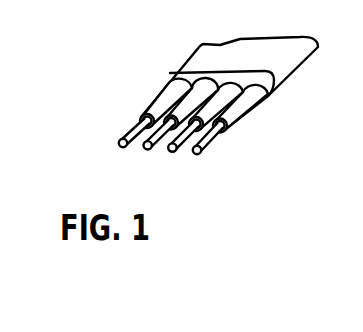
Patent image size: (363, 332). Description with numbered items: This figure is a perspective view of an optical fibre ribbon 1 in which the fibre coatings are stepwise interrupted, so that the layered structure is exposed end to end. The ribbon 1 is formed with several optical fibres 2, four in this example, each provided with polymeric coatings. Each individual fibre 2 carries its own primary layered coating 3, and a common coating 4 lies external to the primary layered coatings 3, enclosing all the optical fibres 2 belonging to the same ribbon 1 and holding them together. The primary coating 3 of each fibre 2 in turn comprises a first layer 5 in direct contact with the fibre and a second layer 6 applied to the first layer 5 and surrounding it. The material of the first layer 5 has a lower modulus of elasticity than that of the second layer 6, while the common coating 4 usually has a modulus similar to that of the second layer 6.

The optical fibre ribbon 1 is at (178, 53).
The optical fibre 2 is at (127, 148).
The primary layered coating 3 is at (181, 108).
The common coating 4 is at (279, 89).
The first layer 5 is at (132, 113).
The second layer 6 is at (220, 126).